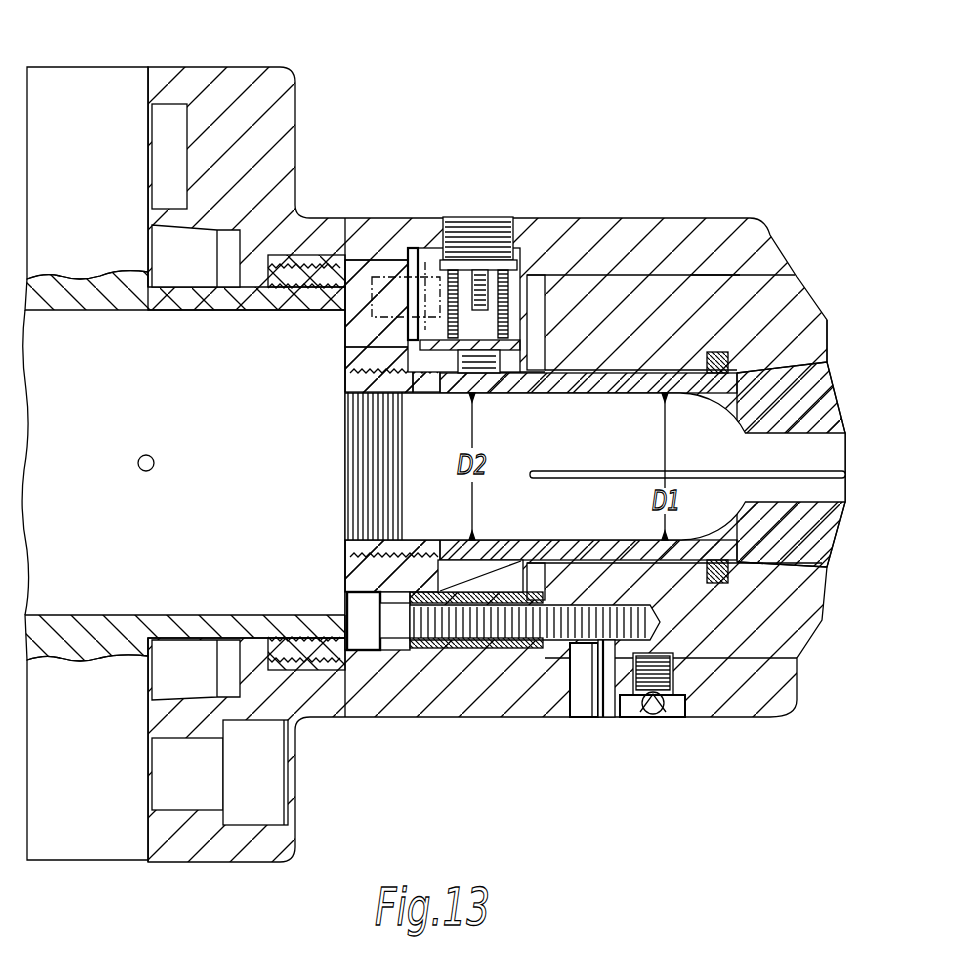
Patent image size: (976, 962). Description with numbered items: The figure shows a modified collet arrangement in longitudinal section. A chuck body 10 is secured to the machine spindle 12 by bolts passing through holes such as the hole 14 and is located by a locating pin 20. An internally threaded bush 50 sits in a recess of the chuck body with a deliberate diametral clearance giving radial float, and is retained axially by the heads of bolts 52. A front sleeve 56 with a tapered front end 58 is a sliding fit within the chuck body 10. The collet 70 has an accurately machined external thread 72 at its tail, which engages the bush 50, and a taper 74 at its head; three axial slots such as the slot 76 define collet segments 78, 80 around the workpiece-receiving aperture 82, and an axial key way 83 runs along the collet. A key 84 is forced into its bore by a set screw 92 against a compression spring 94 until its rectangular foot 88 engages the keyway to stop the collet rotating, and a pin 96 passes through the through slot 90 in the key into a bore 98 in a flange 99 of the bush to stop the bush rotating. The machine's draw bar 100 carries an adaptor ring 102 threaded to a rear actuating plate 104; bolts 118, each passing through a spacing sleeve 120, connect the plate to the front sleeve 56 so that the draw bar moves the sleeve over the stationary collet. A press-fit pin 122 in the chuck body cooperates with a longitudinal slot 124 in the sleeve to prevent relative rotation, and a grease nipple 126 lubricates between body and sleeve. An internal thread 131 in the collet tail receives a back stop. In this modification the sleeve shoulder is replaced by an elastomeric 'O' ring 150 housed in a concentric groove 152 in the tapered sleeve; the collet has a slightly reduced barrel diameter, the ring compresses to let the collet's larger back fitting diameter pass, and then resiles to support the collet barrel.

The chuck body 10 is at (634, 217).
The machine spindle 12 is at (80, 90).
The hole 14 is at (262, 790).
The locating pin 20 is at (196, 140).
The internally threaded bush 50 is at (350, 357).
The bolt 52 is at (430, 262).
The front sleeve 56 is at (806, 278).
The tapered front end 58 is at (793, 365).
The collet 70 is at (829, 360).
The external thread 72 is at (350, 392).
The taper 74 is at (823, 565).
The axially extending slot 76 is at (610, 470).
The collet segment 78 is at (848, 445).
The collet segment 80 is at (850, 490).
The workpiece-receiving aperture 82 is at (750, 447).
The key way 83 is at (586, 368).
The key 84 is at (506, 300).
The rectangular foot 88 is at (462, 373).
The through slot 90 is at (472, 375).
The set screw 92 is at (478, 228).
The compression spring 94 is at (521, 285).
The pin 96 is at (517, 377).
The bore 98 is at (415, 395).
The flange 99 is at (423, 327).
The draw bar 100 is at (97, 306).
The adaptor ring 102 is at (310, 267).
The rear actuating plate 104 is at (333, 267).
The bolt 118 is at (452, 642).
The spacing sleeve 120 is at (493, 650).
The pin 122 is at (584, 697).
The longitudinal slot 124 is at (606, 650).
The grease nipple 126 is at (663, 713).
The internal thread 131 is at (360, 412).
The elastomeric 'O' ring 150 is at (722, 362).
The concentric groove 152 is at (712, 350).